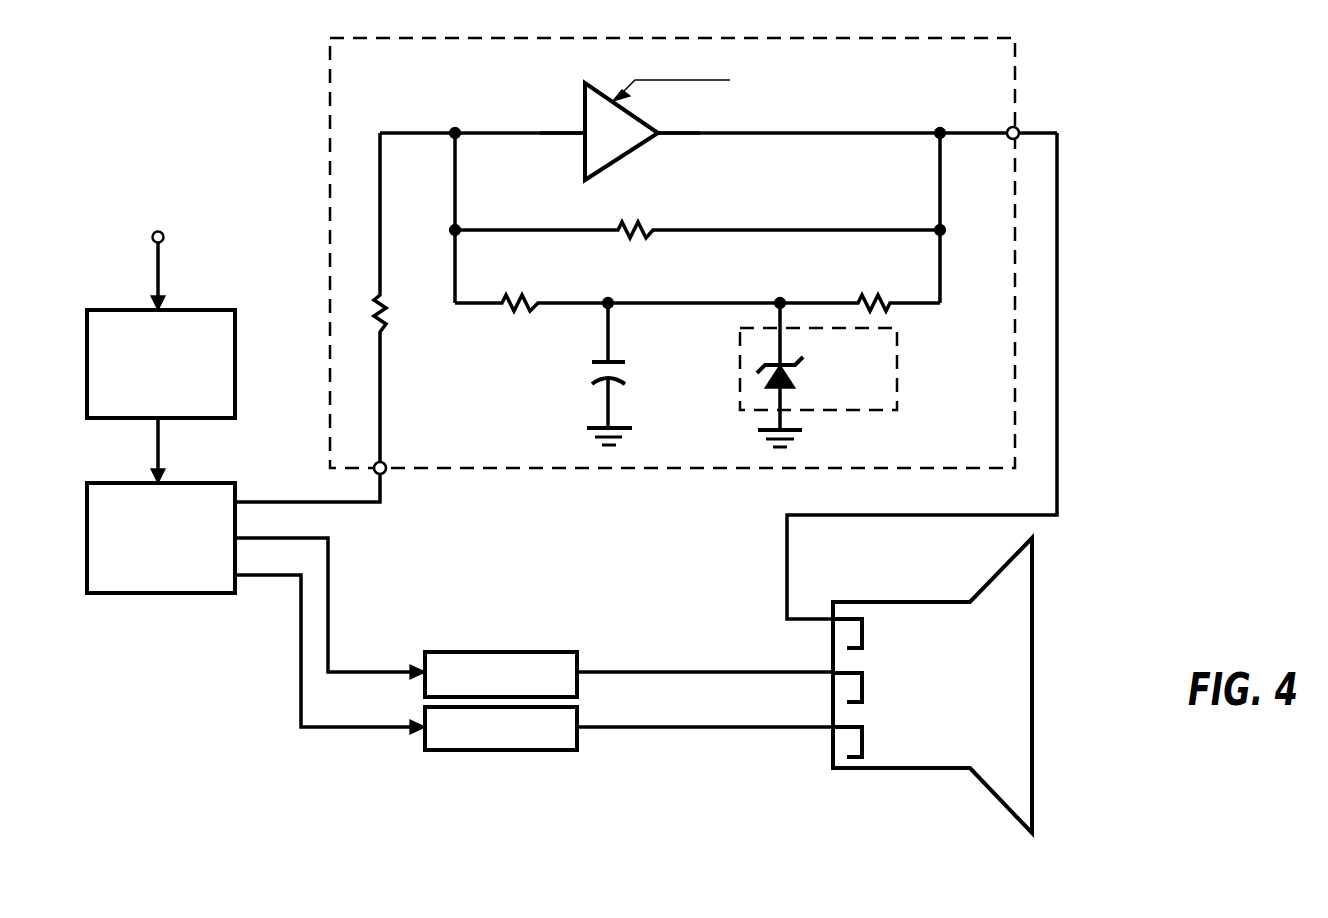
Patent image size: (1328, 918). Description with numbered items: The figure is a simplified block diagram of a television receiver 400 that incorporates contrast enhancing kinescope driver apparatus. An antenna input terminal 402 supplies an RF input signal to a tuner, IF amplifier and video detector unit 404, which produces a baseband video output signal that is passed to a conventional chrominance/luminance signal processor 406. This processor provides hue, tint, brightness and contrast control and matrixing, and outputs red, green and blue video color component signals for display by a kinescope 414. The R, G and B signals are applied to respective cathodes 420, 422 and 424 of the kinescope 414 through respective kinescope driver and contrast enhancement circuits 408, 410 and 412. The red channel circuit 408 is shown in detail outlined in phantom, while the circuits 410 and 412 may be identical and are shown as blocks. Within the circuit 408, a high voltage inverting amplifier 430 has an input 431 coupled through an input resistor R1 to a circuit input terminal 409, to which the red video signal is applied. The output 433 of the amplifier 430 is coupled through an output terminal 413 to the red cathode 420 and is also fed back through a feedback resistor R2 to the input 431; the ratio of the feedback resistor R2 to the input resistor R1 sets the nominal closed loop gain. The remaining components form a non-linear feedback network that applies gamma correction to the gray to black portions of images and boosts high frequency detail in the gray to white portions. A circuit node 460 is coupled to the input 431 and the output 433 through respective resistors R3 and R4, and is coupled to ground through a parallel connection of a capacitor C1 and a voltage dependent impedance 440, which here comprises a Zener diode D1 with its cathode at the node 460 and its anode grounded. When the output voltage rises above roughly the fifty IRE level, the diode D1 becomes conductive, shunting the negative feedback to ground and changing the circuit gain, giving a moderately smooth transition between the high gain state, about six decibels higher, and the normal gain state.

The receiver 400 is at (180, 116).
The antenna input terminal 402 is at (152, 238).
The tuner, IF amplifier and video detector unit 404 is at (188, 310).
The chrominance/luminance signal processor 406 is at (97, 593).
The kinescope driver and contrast enhancement circuit 408 is at (475, 468).
The circuit input terminal 409 is at (386, 462).
The kinescope driver and contrast enhancement circuit 410 is at (522, 652).
The kinescope driver and contrast enhancement circuit 412 is at (545, 750).
The output terminal 413 is at (1017, 127).
The kinescope 414 is at (1017, 706).
The red cathode 420 is at (864, 625).
The green cathode 422 is at (864, 683).
The blue cathode 424 is at (864, 745).
The high voltage inverting amplifier 430 is at (587, 92).
The amplifier input 431 is at (580, 137).
The amplifier output 433 is at (663, 137).
The voltage dependent impedance 440 is at (897, 385).
The circuit node 460 is at (612, 300).
The input resistor R1 is at (388, 305).
The feedback resistor R2 is at (626, 226).
The resistor R3 is at (538, 300).
The resistor R4 is at (890, 300).
The capacitor C1 is at (595, 360).
The Zener diode D1 is at (793, 371).